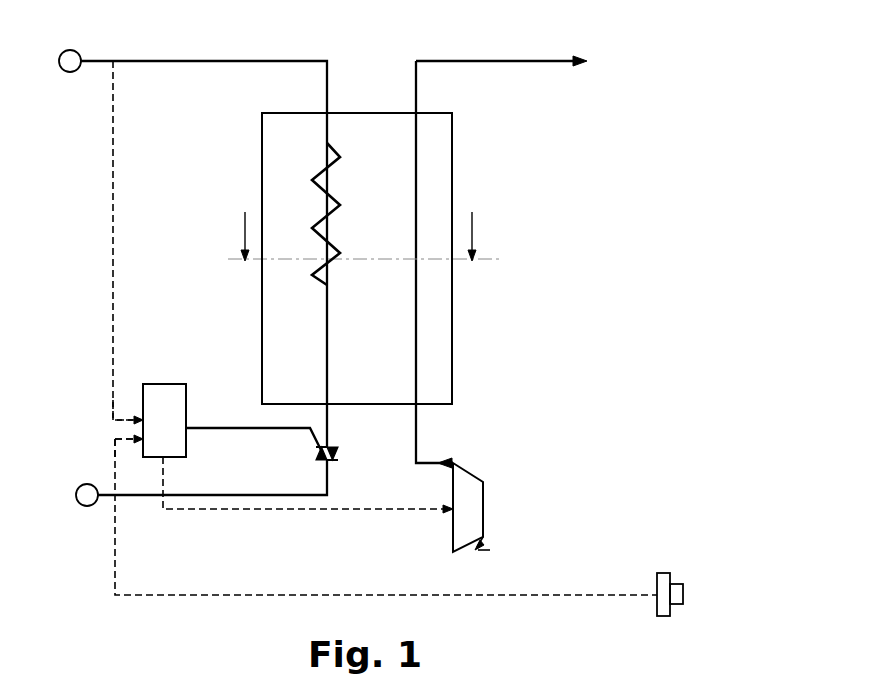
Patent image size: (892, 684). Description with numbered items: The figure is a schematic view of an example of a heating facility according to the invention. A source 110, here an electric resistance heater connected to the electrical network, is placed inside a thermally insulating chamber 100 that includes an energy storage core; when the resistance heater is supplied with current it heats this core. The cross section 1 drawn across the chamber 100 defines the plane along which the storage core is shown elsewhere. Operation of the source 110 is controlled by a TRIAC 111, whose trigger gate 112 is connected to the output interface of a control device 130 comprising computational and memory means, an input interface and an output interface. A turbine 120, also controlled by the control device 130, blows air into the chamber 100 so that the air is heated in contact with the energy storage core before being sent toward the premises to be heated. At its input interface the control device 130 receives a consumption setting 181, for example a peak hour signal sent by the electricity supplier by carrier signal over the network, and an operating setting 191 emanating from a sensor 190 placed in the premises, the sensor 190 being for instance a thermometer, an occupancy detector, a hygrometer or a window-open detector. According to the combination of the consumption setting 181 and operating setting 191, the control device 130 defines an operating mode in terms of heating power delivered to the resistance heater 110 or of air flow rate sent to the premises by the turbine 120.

The cross section 1 is at (361, 236).
The thermally insulating chamber 100 is at (452, 153).
The source 110 is at (318, 172).
The TRIAC 111 is at (338, 458).
The trigger gate 112 is at (312, 436).
The turbine 120 is at (483, 497).
The control device 130 is at (186, 408).
The consumption setting 181 is at (124, 417).
The operating setting 191 is at (130, 441).
The sensor 190 is at (660, 573).